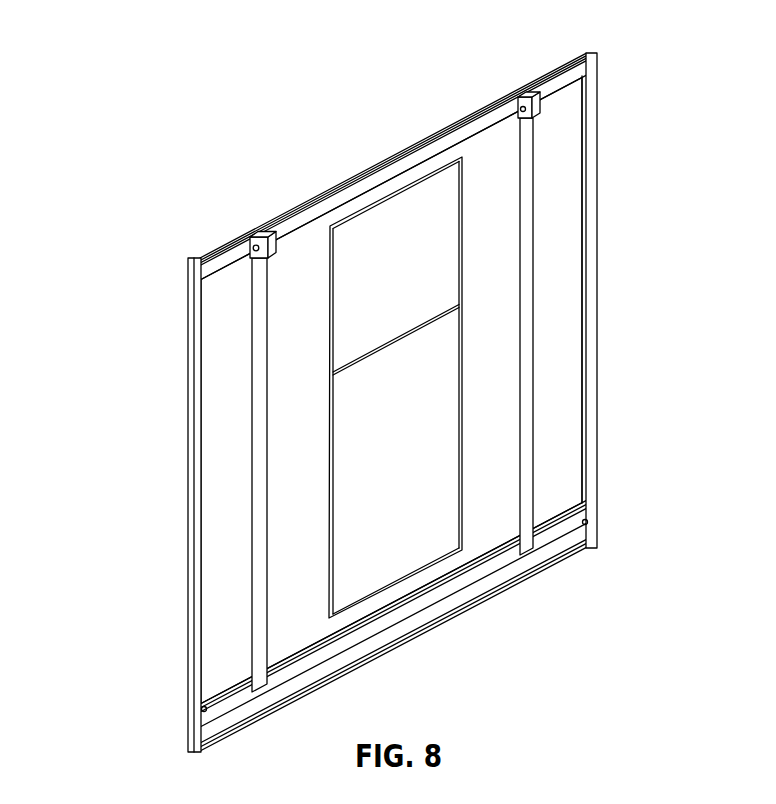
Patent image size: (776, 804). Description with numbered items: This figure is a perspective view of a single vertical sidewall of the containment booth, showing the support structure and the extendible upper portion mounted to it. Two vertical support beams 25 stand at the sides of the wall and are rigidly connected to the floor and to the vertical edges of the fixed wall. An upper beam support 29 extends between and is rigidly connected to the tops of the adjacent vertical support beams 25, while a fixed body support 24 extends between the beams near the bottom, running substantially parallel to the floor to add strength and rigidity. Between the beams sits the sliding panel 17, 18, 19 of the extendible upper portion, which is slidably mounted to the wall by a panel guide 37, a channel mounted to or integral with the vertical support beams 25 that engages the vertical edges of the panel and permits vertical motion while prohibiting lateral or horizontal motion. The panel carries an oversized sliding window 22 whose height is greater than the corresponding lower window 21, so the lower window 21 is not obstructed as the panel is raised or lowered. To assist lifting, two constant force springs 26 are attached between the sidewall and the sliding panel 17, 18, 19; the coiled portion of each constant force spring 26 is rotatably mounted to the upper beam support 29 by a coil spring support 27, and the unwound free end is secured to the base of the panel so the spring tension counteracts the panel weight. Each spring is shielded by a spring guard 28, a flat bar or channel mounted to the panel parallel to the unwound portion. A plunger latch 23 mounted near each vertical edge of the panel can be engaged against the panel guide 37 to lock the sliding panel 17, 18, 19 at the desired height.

The sliding panel 17 is at (316, 391).
The secondary sliding panel 18 is at (316, 391).
The end wall sliding panel 19 is at (232, 432).
The lower window 21 is at (392, 268).
The oversized sliding window 22 is at (462, 360).
The plunger latch 23 is at (204, 710).
The fixed body support 24 is at (525, 580).
The vertical support beam 25 is at (190, 636).
The constant force spring 26 is at (256, 317).
The coil spring support 27 is at (251, 250).
The spring guard 28 is at (252, 238).
The upper beam support 29 is at (303, 203).
The panel guide 37 is at (587, 98).